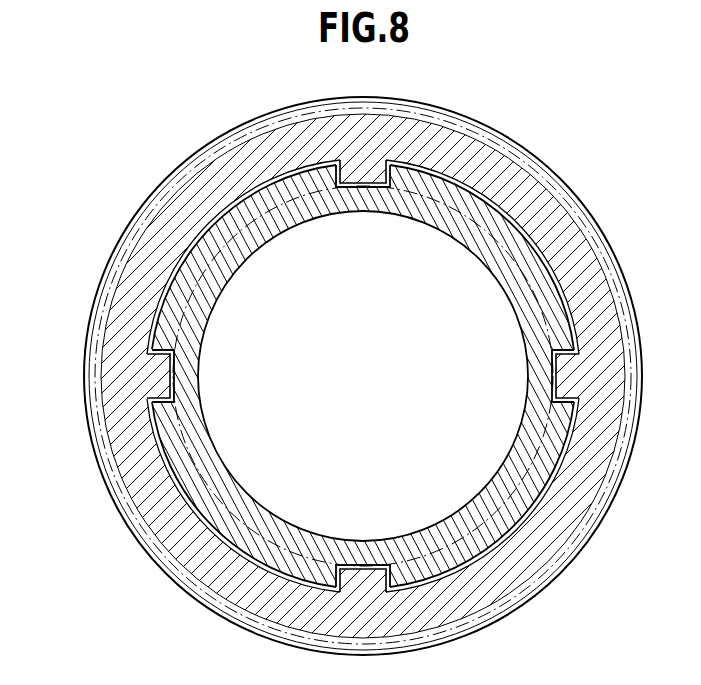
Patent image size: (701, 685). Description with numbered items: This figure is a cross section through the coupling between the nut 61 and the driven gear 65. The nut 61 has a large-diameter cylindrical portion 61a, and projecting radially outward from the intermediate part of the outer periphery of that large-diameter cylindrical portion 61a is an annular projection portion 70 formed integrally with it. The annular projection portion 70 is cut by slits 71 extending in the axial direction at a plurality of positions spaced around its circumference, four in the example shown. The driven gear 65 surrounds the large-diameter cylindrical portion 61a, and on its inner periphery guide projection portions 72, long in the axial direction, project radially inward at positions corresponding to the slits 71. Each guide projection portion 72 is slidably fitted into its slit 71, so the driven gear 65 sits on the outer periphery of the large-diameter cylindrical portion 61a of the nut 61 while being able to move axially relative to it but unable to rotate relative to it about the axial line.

The nut 61 is at (177, 519).
The large-diameter cylindrical portion 61a is at (215, 472).
The driven gear 65 is at (263, 607).
The annular projection portion 70 is at (190, 237).
The slit 71 is at (345, 165).
The guide projection portion 72 is at (360, 187).